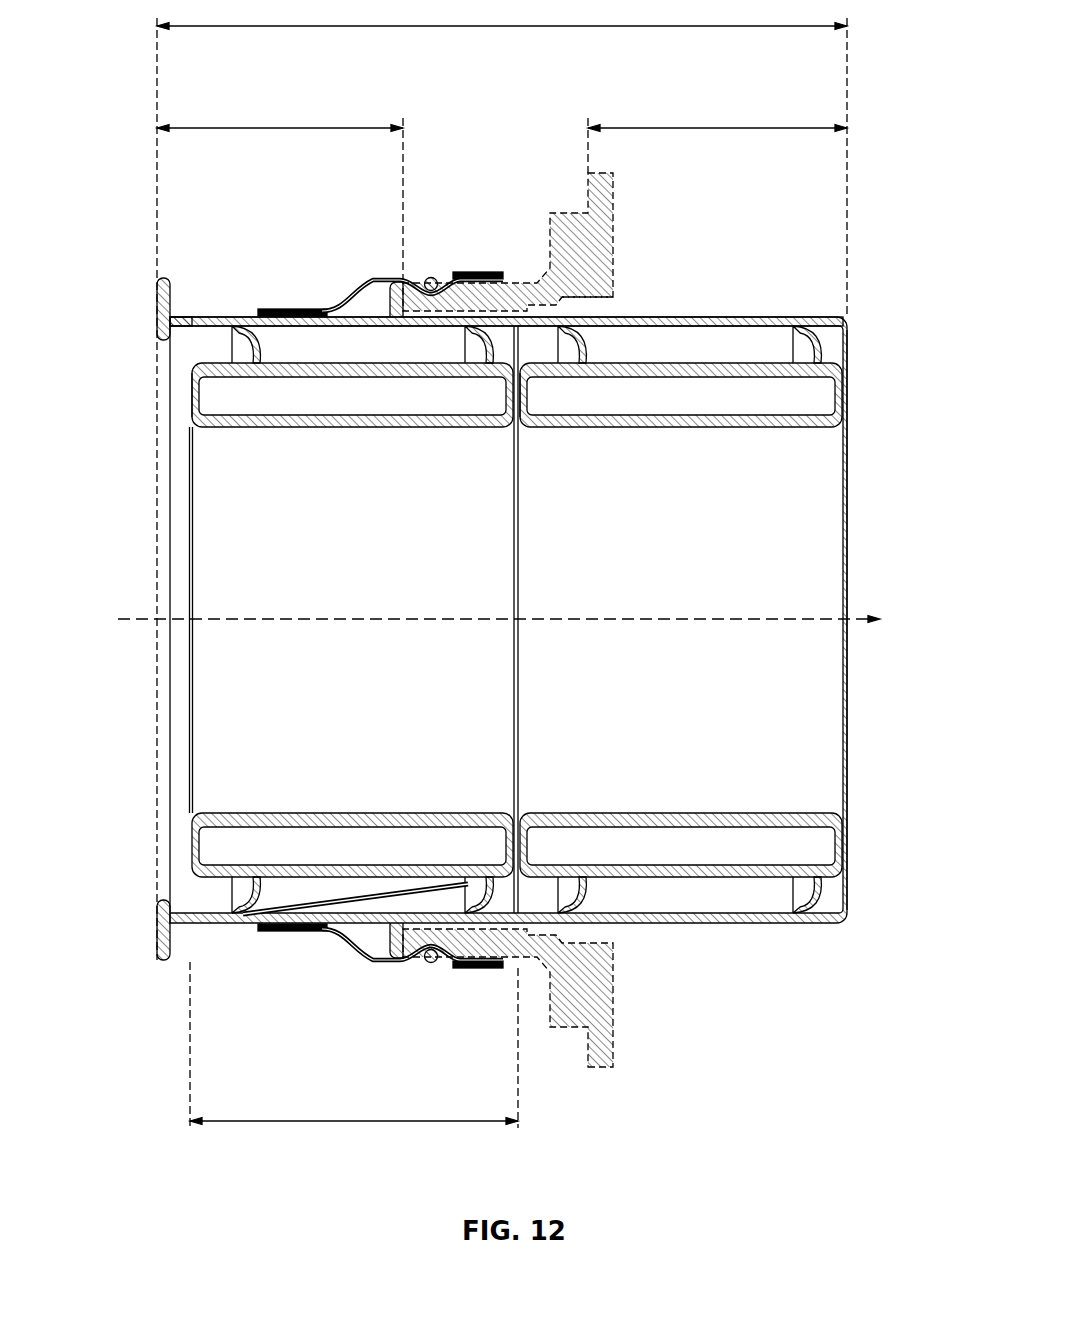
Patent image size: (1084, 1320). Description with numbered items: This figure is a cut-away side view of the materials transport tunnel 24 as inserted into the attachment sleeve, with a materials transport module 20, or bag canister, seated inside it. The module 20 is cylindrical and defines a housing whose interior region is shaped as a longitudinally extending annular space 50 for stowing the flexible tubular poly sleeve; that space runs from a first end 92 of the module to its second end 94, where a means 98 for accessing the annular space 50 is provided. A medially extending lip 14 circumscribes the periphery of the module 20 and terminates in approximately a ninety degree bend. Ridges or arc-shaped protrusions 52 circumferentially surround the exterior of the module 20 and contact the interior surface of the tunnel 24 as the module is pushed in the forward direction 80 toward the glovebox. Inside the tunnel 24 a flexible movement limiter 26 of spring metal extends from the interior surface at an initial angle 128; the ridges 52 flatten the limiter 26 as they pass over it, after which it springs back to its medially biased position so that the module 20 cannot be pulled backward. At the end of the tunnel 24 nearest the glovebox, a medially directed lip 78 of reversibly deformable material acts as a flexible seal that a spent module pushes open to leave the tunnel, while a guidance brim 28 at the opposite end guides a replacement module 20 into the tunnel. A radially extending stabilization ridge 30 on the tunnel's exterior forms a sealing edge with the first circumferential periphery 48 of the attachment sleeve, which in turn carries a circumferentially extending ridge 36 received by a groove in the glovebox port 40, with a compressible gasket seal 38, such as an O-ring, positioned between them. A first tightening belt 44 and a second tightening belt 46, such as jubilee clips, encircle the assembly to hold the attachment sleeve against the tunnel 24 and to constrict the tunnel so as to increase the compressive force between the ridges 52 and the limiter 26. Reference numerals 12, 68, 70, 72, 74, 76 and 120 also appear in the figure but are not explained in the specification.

The housing 12 is at (506, 605).
The medially extending lip 14 is at (190, 862).
The materials transport module 20 is at (329, 619).
The materials transport tunnel 24 is at (185, 322).
The flexible movement limiter 26 is at (386, 950).
The guidance brim 28 is at (158, 300).
The stabilization ridge 30 is at (397, 282).
The circumferentially extending ridge 36 is at (443, 890).
The compressible gasket seal 38 is at (433, 278).
The glovebox port 40 is at (541, 618).
The first tightening belt 44 is at (318, 309).
The second tightening belt 46 is at (501, 276).
The first circumferential periphery 48 is at (388, 279).
The annular space 50 is at (300, 408).
The arc-shaped protrusions 52 is at (578, 338).
The overall length 68 is at (500, 26).
The first length 70 is at (282, 128).
The second length 72 is at (712, 128).
The mating surface 74 is at (567, 297).
The spring length 76 is at (350, 1122).
The medially directed lip 78 is at (848, 540).
The forward direction 80 is at (378, 617).
The first end 92 is at (205, 662).
The second end 94 is at (515, 542).
The means for accessing the annular space 98 is at (192, 395).
The wall joint 120 is at (190, 318).
The initial angle 128 is at (420, 905).